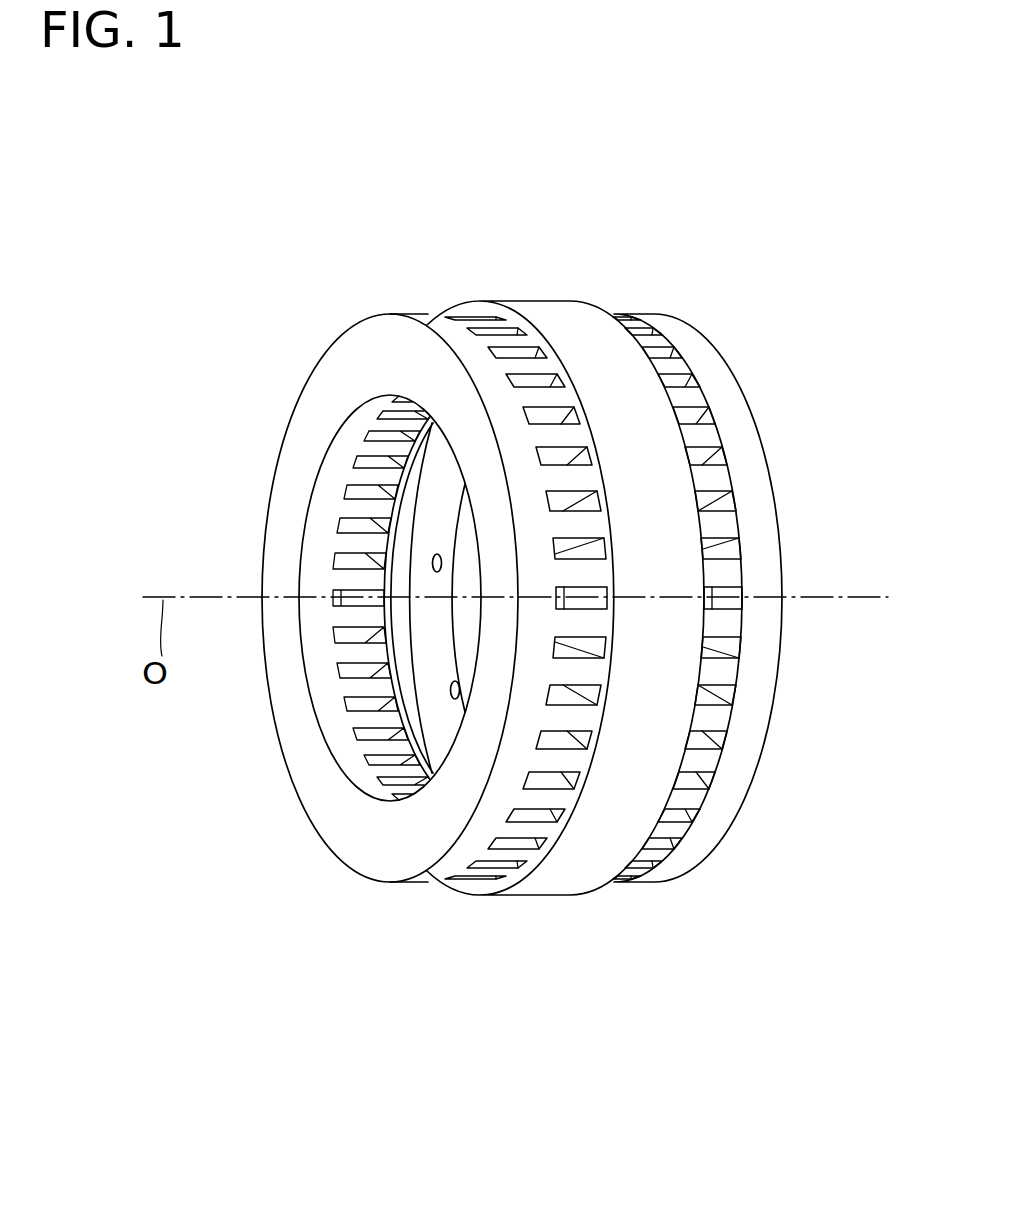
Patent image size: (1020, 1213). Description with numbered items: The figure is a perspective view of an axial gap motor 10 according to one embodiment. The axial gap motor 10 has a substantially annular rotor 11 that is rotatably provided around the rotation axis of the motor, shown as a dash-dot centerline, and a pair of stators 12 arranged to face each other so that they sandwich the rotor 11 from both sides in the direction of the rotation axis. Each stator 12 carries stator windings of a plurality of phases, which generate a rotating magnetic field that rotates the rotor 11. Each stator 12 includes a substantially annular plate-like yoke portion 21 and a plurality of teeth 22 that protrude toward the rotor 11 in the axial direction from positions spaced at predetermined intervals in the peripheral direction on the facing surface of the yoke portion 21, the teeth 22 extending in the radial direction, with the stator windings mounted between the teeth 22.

The axial gap motor 10 is at (547, 575).
The rotor 11 is at (533, 284).
The stator 12 is at (428, 284).
The yoke portion 21 is at (460, 862).
The teeth 22 is at (527, 828).